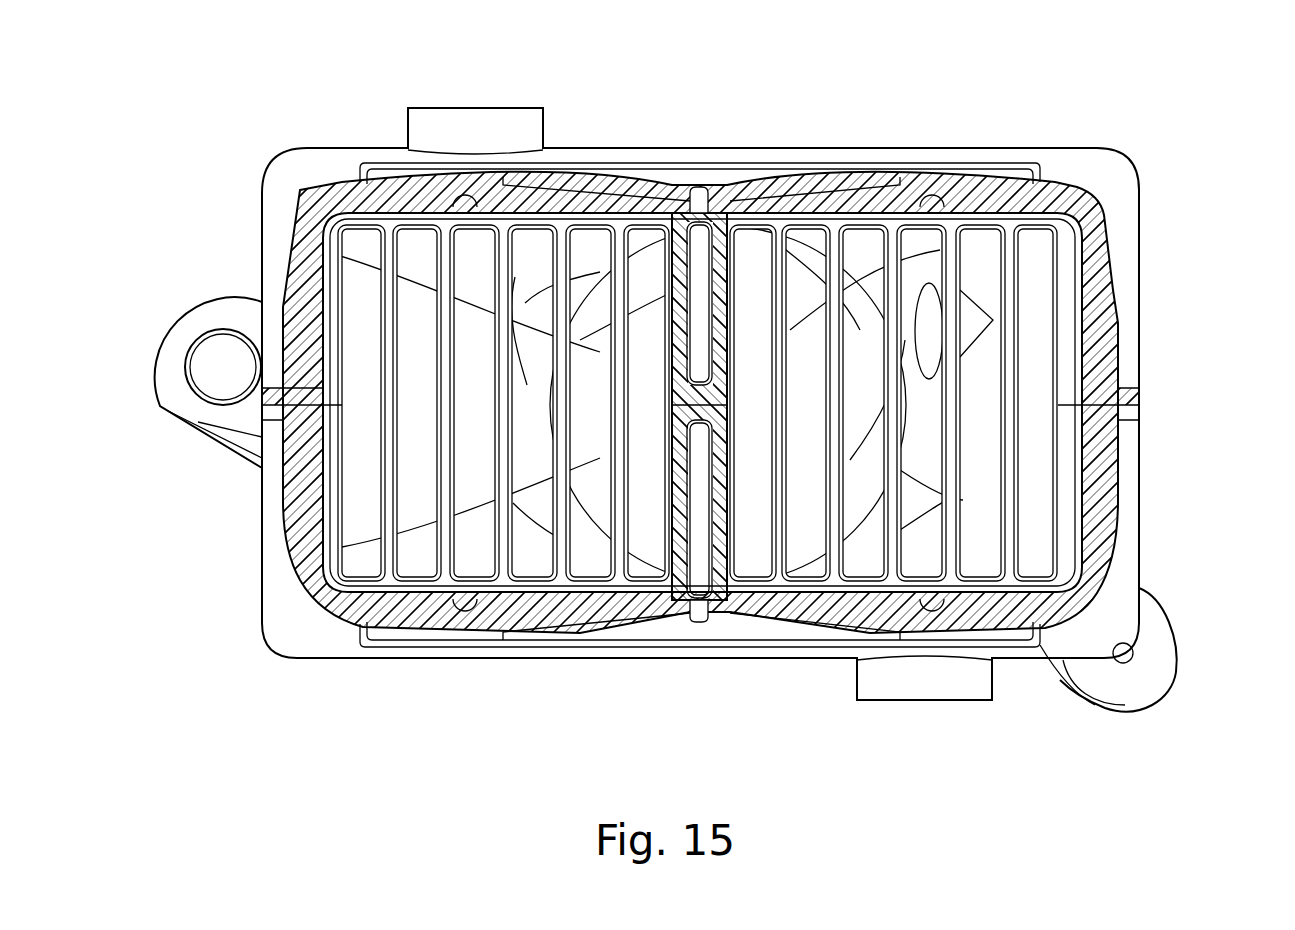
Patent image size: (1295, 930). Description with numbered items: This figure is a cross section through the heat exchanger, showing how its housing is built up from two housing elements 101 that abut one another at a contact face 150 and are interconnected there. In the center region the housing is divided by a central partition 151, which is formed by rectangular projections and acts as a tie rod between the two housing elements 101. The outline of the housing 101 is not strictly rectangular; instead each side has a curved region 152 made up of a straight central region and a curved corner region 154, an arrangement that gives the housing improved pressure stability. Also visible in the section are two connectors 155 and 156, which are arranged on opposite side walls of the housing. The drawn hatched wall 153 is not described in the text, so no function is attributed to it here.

The housing element 101 is at (957, 208).
The contact face 150 is at (342, 412).
The central partition 151 is at (719, 214).
The curved region 152 is at (1107, 361).
The insulating wall 153 is at (1107, 324).
The curved corner region 154 is at (1077, 208).
The connector 155 is at (515, 128).
The connector 156 is at (968, 674).